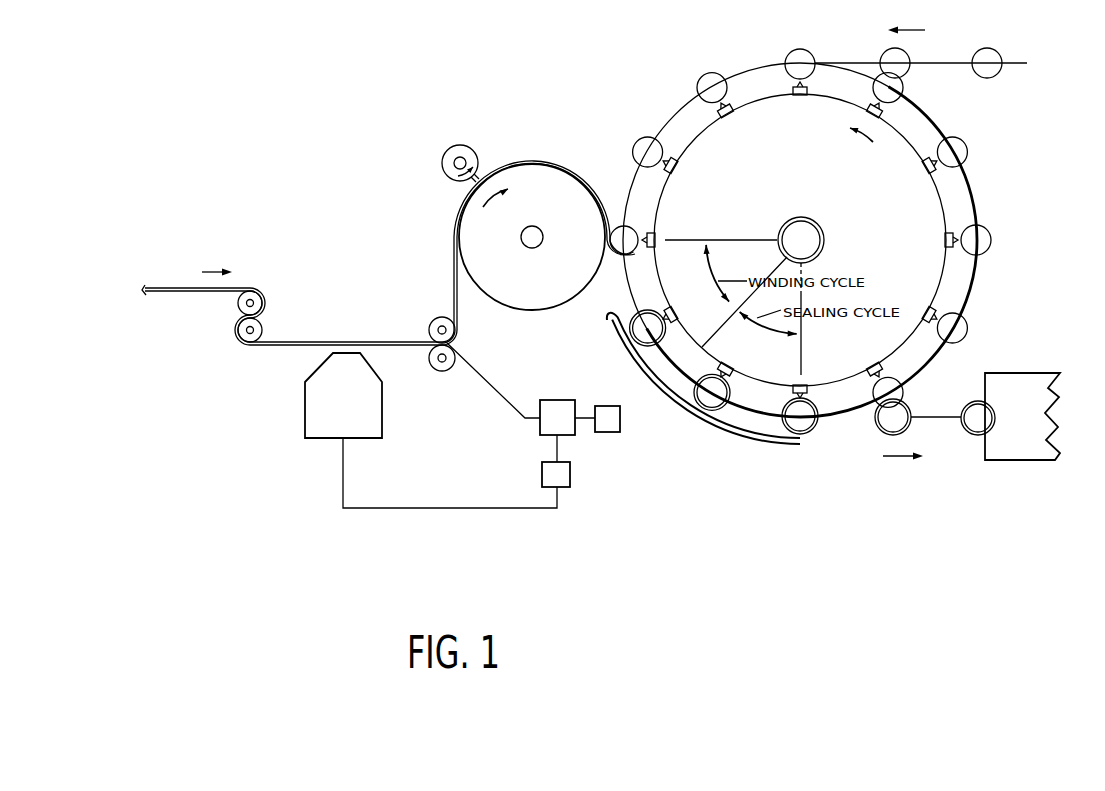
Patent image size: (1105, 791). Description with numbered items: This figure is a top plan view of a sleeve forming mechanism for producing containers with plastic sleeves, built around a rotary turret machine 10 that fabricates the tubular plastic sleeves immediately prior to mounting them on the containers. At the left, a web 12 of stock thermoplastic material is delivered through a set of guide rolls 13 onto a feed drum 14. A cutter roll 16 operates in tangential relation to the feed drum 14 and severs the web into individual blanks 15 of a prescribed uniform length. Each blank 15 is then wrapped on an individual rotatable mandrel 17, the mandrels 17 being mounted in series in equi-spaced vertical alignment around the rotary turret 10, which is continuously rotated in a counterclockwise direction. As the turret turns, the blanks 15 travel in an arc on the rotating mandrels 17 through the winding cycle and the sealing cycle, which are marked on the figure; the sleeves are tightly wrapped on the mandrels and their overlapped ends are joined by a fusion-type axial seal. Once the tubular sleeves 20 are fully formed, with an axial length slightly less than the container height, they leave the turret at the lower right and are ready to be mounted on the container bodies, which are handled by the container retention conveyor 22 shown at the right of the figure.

The rotary turret machine 10 is at (988, 181).
The web 12 is at (182, 286).
The guide rolls 13 is at (242, 334).
The feed drum 14 is at (530, 311).
The blanks 15 is at (577, 170).
The cutter roll 16 is at (460, 144).
The mandrels 17 is at (648, 136).
The tubular sleeves 20 is at (881, 430).
The container retention conveyor 22 is at (934, 436).